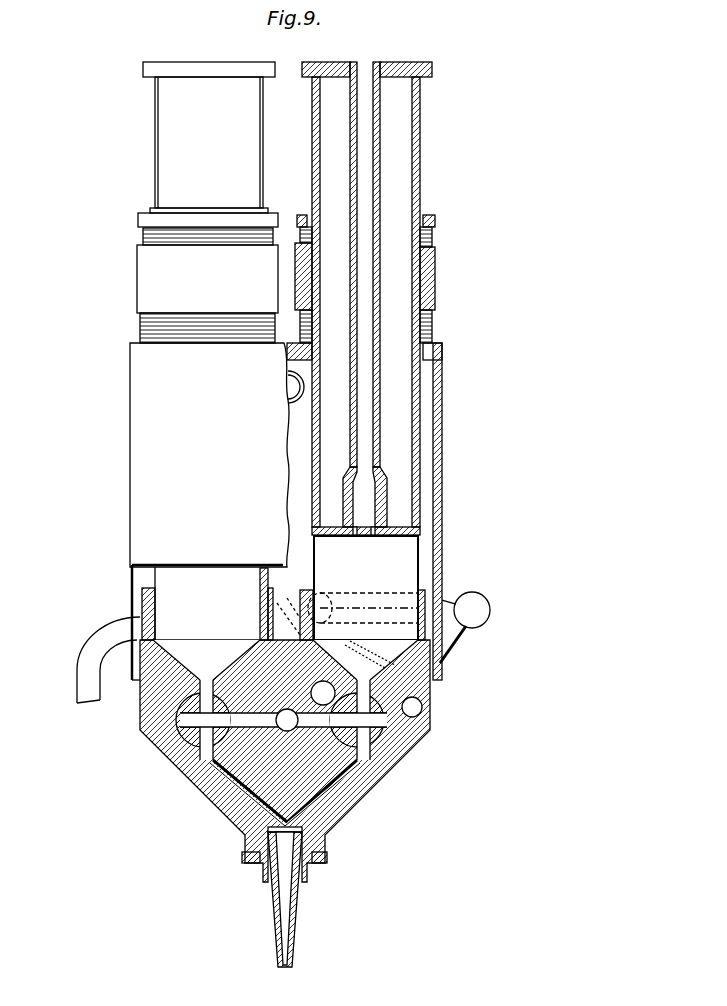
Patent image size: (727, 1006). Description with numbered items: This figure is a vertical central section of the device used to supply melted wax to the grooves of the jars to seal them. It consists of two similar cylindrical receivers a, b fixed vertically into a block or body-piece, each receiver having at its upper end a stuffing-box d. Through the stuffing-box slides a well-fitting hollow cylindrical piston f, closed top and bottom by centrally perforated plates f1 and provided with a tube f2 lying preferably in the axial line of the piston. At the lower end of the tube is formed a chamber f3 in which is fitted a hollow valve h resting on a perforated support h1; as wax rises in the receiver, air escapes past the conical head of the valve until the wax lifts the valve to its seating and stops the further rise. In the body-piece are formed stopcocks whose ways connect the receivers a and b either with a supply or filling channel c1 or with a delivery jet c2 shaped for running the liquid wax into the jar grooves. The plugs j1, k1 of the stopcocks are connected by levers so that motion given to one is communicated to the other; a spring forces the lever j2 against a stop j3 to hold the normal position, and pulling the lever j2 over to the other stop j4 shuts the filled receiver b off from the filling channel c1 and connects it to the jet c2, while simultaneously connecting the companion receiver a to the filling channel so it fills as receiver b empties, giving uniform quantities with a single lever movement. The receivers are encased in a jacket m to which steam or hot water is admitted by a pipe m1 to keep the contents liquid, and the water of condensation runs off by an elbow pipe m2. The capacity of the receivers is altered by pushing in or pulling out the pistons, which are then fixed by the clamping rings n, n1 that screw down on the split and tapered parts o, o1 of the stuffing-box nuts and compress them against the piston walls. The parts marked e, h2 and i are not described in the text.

The cylindrical receiver a is at (423, 522).
The cylindrical receiver b is at (155, 580).
The supply or filling channel c1 is at (200, 770).
The delivery jet c2 is at (283, 920).
The stuffing-box d is at (430, 320).
The valve body e is at (283, 722).
The hollow cylindrical piston f is at (371, 264).
The plate f1 is at (425, 64).
The tube f2 is at (366, 302).
The chamber f3 is at (350, 500).
The hollow valve h is at (355, 537).
The perforated support h1 is at (373, 537).
The connecting passage h2 is at (288, 616).
The bore i is at (363, 602).
The stopcock plug j1 is at (397, 740).
The lever j2 is at (460, 640).
The stop j3 is at (424, 706).
The stop j4 is at (370, 655).
The stopcock plug k1 is at (187, 745).
The jacket m is at (448, 412).
The pipe m1 is at (290, 393).
The elbow pipe m2 is at (95, 650).
The clamping ring n is at (424, 217).
The clamping ring n1 is at (143, 215).
The split and tapered part o is at (428, 238).
The split and tapered part o1 is at (145, 234).